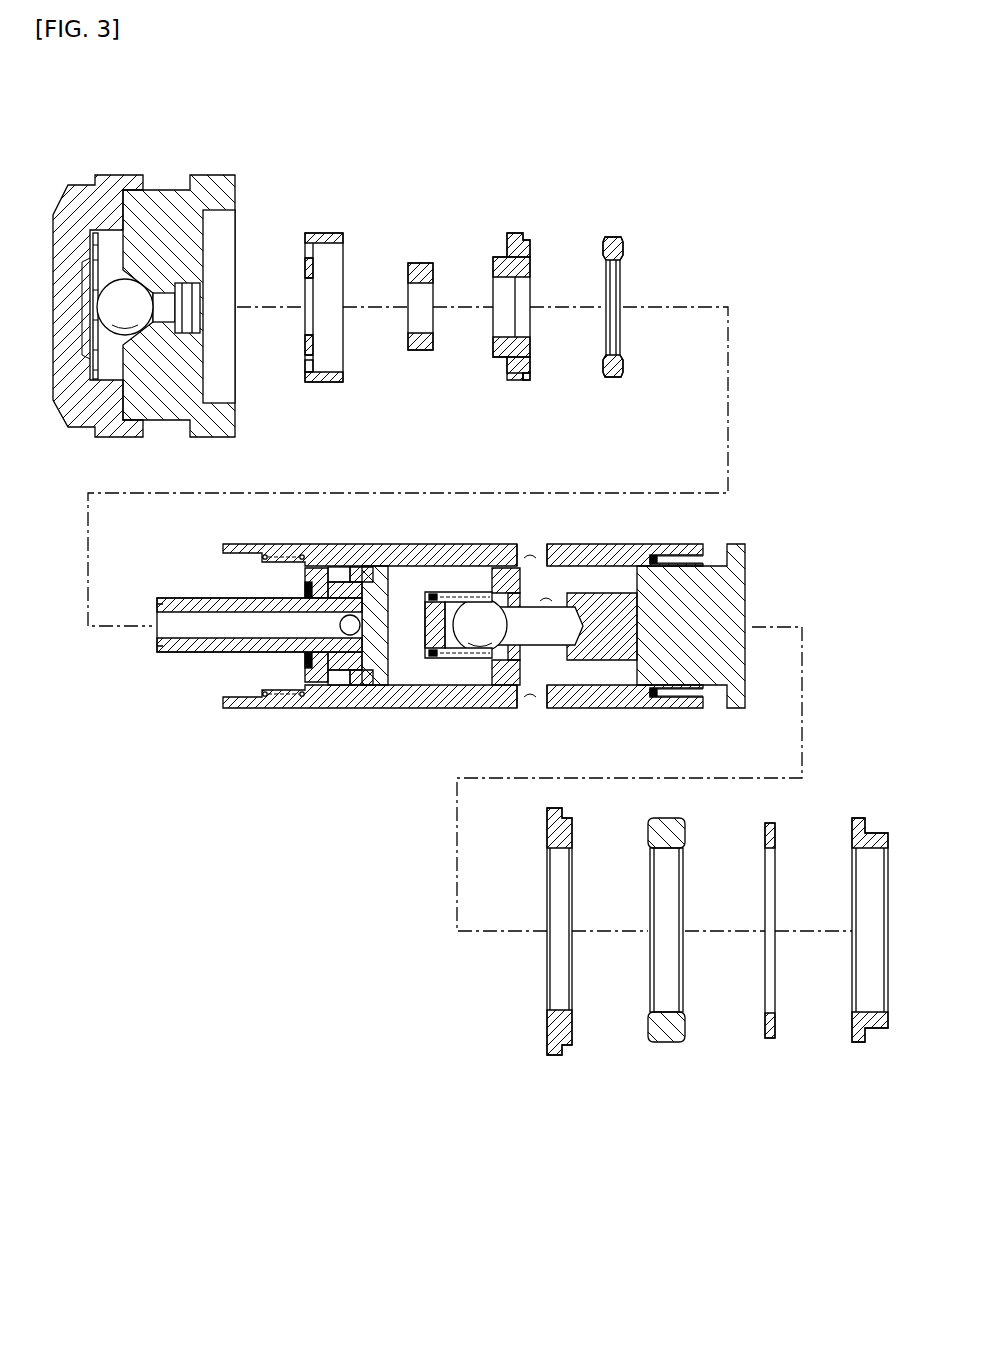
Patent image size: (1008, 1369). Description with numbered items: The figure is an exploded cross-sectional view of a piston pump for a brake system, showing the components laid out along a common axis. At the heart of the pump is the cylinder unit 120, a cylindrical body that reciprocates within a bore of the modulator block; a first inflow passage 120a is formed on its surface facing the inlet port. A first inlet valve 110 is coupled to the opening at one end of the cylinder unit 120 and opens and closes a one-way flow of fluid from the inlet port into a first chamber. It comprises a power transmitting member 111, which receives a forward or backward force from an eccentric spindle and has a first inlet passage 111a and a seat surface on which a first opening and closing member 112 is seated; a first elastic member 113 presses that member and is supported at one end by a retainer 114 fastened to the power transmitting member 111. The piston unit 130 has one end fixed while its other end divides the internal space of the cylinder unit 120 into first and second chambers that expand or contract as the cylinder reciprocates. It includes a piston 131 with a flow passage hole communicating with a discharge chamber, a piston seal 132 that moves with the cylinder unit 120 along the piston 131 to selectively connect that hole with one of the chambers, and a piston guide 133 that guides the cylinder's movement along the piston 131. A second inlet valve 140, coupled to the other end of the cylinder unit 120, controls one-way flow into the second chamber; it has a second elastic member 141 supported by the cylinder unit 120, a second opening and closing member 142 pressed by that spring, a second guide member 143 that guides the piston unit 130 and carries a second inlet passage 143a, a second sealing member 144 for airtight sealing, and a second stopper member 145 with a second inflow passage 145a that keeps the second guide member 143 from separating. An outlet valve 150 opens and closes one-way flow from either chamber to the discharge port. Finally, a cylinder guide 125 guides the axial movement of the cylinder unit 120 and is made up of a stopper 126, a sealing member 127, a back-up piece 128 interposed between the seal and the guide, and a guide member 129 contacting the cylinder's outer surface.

The first inlet valve 110 is at (768, 568).
The power transmitting member 111 is at (606, 648).
The first inlet passage 111a is at (550, 600).
The first opening and closing member 112 is at (530, 686).
The first elastic member 113 is at (488, 637).
The retainer 114 is at (437, 660).
The cylinder unit 120 is at (338, 710).
The first inflow passage 120a is at (531, 556).
The cylinder guide 125 is at (709, 997).
The stopper 126 is at (553, 1058).
The sealing member 127 is at (665, 1044).
The back-up piece 128 is at (770, 1040).
The guide member 129 is at (865, 968).
The piston unit 130 is at (180, 672).
The piston 131 is at (392, 598).
The piston seal 132 is at (365, 570).
The piston guide 133 is at (320, 574).
The second inlet valve 140 is at (622, 192).
The second elastic member 141 is at (268, 553).
The second opening and closing member 142 is at (614, 378).
The second guide member 143 is at (512, 382).
The second inlet passage 143a is at (531, 378).
The second sealing member 144 is at (428, 353).
The second stopper member 145 is at (330, 383).
The second inflow passage 145a is at (304, 376).
The outlet valve 150 is at (143, 163).